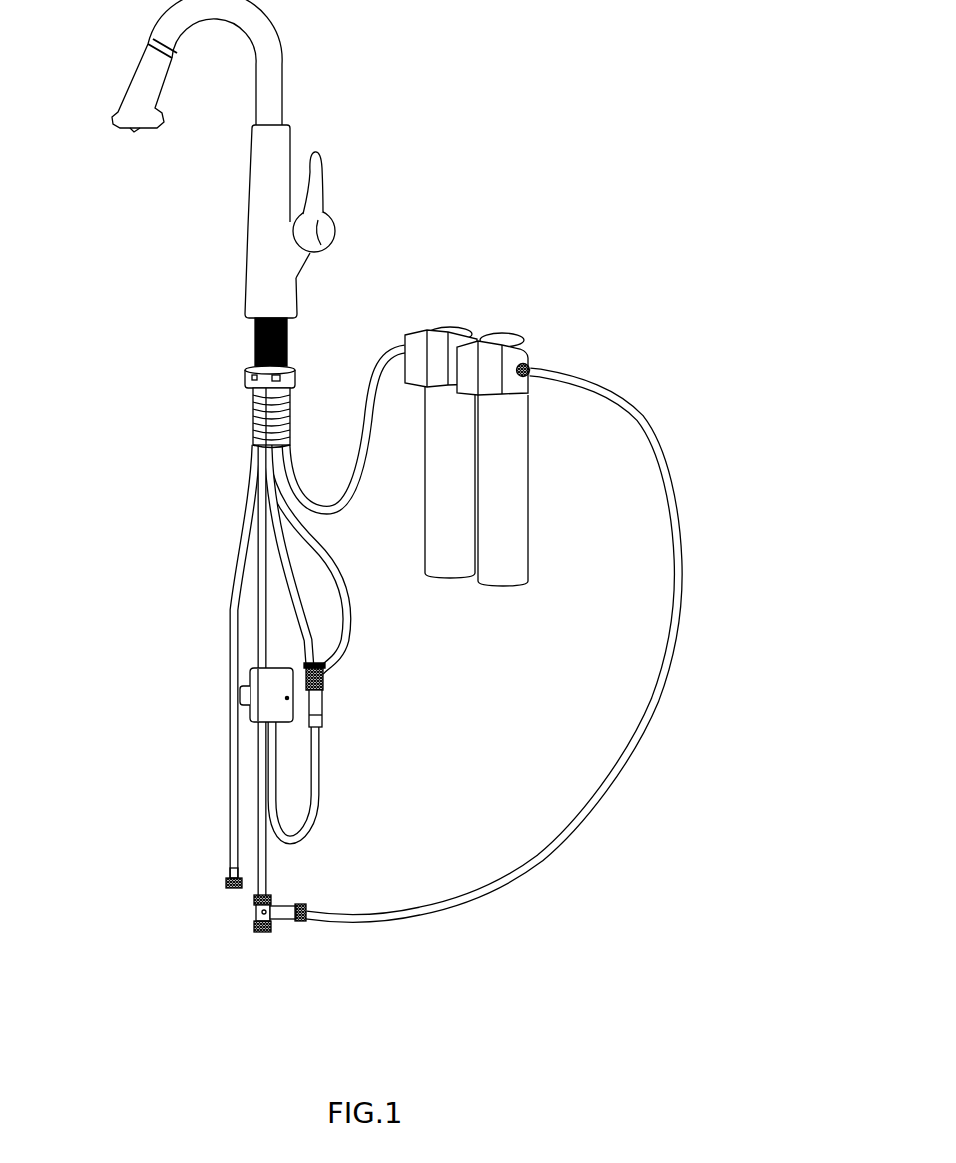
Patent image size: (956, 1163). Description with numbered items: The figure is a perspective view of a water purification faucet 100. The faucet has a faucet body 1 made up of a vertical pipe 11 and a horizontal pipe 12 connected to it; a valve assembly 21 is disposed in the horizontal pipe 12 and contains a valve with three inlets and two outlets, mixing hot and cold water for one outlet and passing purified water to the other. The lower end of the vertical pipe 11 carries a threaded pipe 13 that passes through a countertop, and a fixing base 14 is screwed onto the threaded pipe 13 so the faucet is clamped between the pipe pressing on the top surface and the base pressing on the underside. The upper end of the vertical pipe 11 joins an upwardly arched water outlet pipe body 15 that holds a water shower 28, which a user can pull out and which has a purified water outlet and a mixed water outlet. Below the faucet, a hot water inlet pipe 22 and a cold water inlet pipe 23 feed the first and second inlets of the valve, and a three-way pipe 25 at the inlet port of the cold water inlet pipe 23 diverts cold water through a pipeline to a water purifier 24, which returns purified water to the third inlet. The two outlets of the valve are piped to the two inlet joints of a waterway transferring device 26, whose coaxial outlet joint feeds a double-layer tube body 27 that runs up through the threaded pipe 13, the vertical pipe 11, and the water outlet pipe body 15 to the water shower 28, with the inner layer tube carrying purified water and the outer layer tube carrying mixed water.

The water purification faucet 100 is at (479, 117).
The faucet body 1 is at (225, 224).
The vertical pipe 11 is at (266, 176).
The horizontal pipe 12 is at (302, 262).
The threaded pipe 13 is at (257, 343).
The fixing base 14 is at (257, 392).
The water outlet pipe body 15 is at (268, 78).
The valve assembly 21 is at (292, 230).
The hot water inlet pipe 22 is at (230, 648).
The cold water inlet pipe 23 is at (263, 855).
The water purifier 24 is at (515, 478).
The three-way pipe 25 is at (258, 920).
The waterway transferring device 26 is at (320, 700).
The double-layer tube body 27 is at (315, 785).
The water shower 28 is at (142, 90).